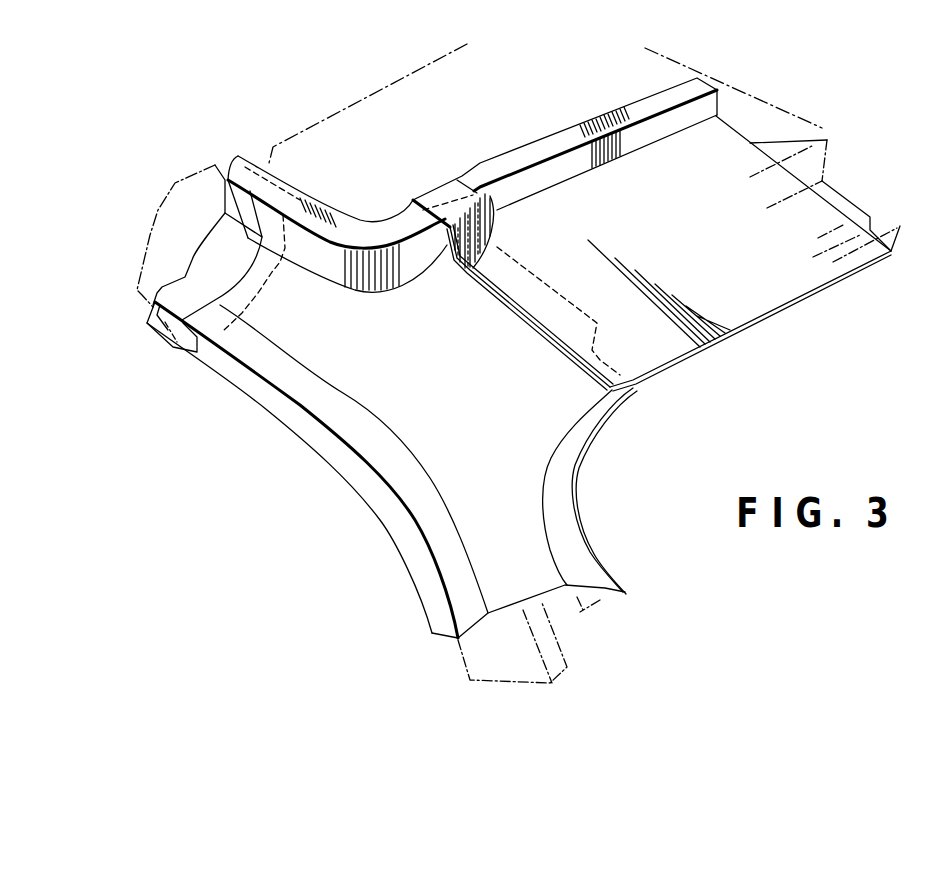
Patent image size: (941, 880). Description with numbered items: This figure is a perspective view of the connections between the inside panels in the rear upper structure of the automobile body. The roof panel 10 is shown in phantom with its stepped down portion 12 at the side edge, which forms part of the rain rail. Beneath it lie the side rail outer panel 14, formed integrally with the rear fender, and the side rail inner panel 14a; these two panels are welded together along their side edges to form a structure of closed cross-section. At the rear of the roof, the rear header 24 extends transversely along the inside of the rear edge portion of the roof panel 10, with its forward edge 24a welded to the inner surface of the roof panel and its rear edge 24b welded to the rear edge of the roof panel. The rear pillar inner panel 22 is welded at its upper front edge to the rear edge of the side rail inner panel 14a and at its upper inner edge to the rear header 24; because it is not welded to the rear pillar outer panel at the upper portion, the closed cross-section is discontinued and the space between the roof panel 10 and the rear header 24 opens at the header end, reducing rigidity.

The roof panel 10 is at (367, 89).
The stepped down portion 12 is at (253, 157).
The side rail outer panel 14 is at (150, 233).
The side rail inner panel 14a is at (212, 247).
The rear pillar inner panel 22 is at (360, 480).
The rear header 24 is at (737, 153).
The forward edge 24a is at (565, 134).
The rear edge 24b is at (757, 302).